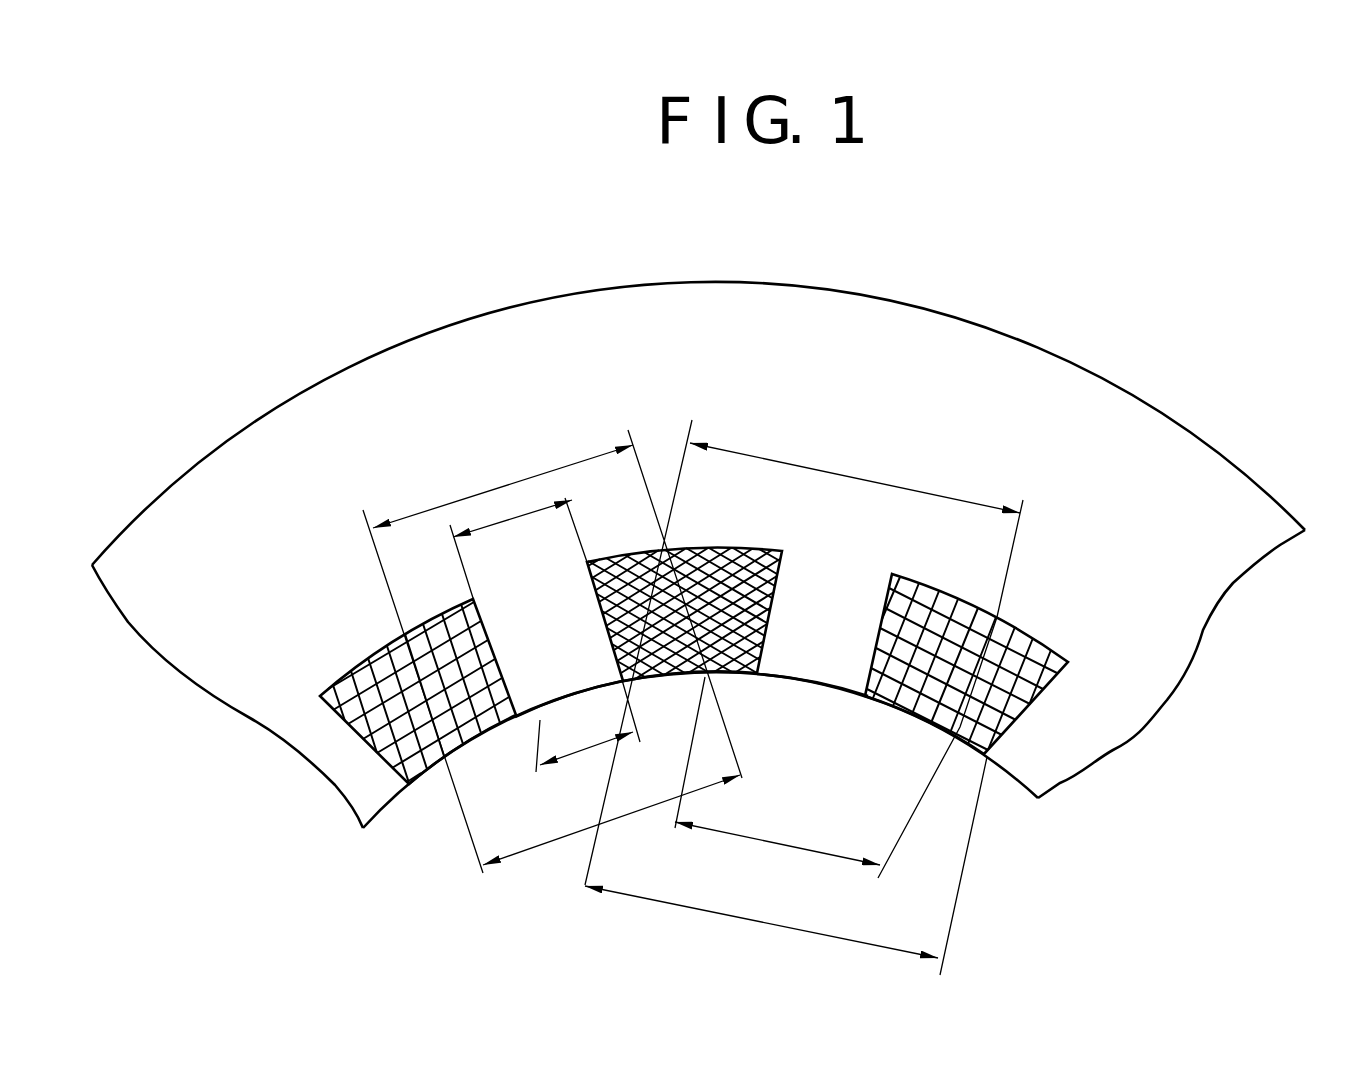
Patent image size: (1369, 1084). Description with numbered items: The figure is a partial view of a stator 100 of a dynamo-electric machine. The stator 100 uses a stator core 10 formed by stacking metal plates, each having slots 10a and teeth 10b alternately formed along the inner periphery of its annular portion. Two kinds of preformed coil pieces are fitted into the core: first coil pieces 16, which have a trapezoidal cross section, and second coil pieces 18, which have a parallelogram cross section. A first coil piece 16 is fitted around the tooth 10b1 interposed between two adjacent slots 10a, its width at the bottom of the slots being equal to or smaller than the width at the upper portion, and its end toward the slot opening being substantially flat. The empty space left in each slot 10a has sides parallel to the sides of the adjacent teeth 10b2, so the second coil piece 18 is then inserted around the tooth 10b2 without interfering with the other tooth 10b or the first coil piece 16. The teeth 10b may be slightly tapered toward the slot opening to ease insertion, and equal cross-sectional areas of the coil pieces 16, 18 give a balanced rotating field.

The stator 100 is at (1247, 413).
The stator core 10 is at (1203, 571).
The slot 10a is at (640, 653).
The tooth 10b is at (332, 757).
The tooth fitted with the first coil piece 10b1 is at (850, 670).
The tooth adjacent to the first-coil tooth 10b2 is at (540, 718).
The first coil piece 16 is at (952, 592).
The second coil piece 18 is at (458, 652).